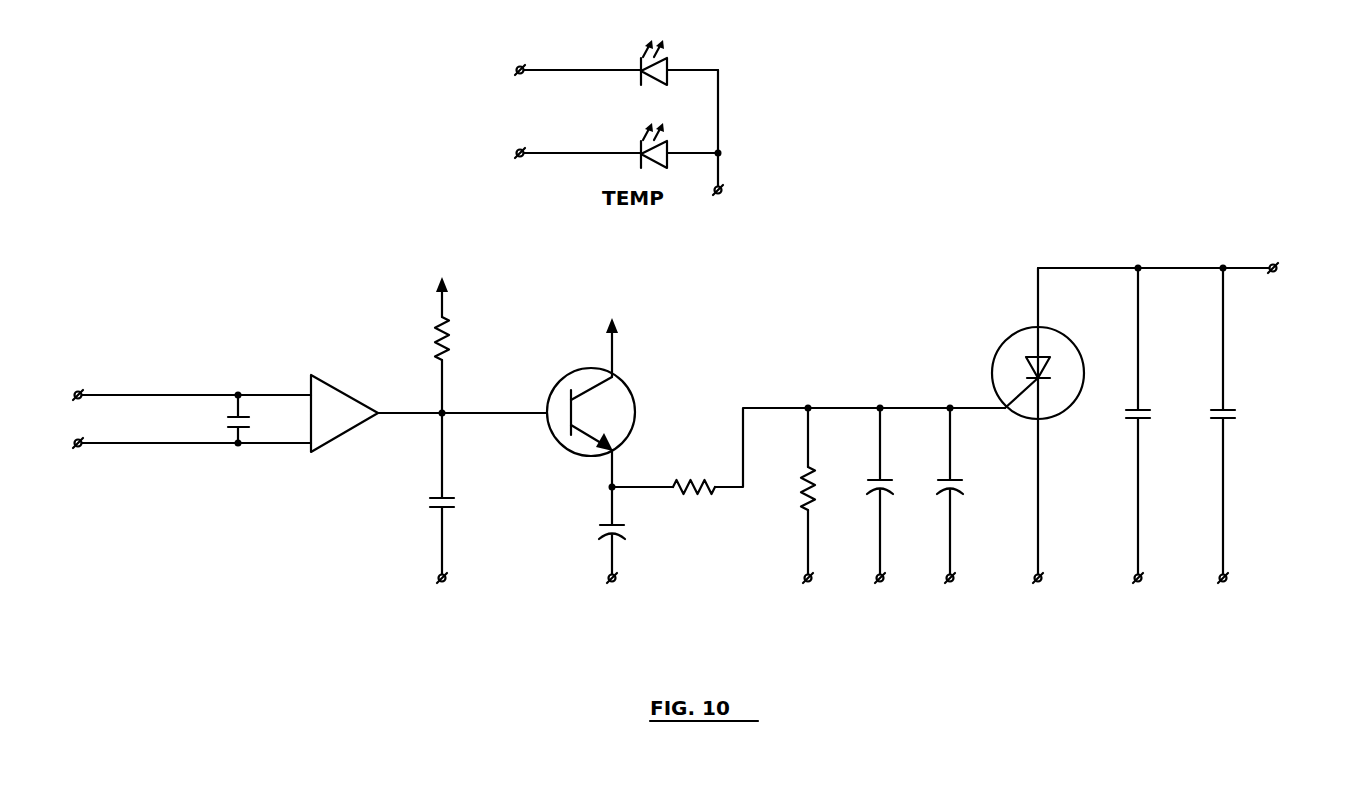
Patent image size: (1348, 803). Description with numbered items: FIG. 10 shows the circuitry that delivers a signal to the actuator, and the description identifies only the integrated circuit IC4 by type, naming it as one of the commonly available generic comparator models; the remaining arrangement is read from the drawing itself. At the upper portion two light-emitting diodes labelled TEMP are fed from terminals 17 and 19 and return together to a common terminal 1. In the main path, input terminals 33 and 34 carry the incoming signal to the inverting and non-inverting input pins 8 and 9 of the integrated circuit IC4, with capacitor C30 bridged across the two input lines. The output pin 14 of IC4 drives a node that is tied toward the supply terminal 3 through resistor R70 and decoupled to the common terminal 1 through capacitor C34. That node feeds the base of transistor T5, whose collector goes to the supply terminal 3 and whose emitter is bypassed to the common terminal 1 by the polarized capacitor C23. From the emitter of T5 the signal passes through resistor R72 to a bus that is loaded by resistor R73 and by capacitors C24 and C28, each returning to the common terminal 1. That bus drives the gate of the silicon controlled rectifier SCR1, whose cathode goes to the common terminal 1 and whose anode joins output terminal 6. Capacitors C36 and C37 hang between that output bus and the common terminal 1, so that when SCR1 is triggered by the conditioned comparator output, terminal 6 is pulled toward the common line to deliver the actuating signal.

The LED terminal 17 is at (600, 62).
The LED terminal 19 is at (600, 145).
The ground terminal 1 is at (832, 397).
The supply terminal 3 is at (527, 314).
The output terminal 6 is at (1168, 269).
The IC4 inverting input pin 8 is at (300, 383).
The IC4 non-inverting input pin 9 is at (300, 458).
The IC4 output pin 14 is at (461, 400).
The input terminal 33 is at (175, 395).
The input terminal 34 is at (175, 443).
The capacitor C30 0.01uF C30 is at (214, 448).
The integrated circuit IC4 is at (344, 413).
The resistor R70 100K R70 is at (484, 407).
The capacitor C34 0.01uF C34 is at (484, 522).
The transistor T5 MP514A T5 is at (652, 426).
The capacitor C23 2.2uF C23 is at (641, 536).
The resistor R72 220K R72 is at (807, 466).
The resistor R73 1K R73 is at (831, 490).
The capacitor C24 2.2uF C24 is at (909, 490).
The capacitor C28 .01uF C28 is at (977, 490).
The silicon controlled rectifier SCR1 is at (1050, 421).
The capacitor C36 is at (1157, 421).
The capacitor C37 0.1uF/KV C37 is at (1272, 421).